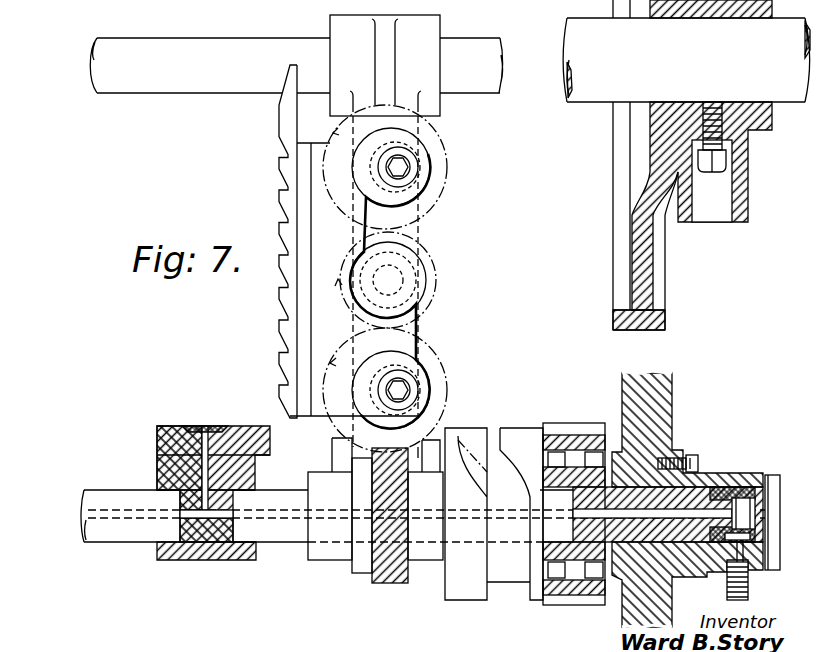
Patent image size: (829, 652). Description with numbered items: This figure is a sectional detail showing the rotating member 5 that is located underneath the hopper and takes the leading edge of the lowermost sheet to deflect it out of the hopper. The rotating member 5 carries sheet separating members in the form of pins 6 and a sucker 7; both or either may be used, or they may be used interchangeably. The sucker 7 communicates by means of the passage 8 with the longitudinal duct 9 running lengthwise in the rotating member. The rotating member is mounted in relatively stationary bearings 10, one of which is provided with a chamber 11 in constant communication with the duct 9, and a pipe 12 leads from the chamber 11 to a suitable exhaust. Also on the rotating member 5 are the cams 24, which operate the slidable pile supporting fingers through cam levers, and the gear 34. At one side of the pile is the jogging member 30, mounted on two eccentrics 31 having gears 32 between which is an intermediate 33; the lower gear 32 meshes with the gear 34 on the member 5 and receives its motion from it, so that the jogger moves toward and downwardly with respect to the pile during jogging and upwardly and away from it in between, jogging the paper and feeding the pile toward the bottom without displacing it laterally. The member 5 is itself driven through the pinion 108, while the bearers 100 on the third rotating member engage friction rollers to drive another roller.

The rotating member 5 is at (289, 545).
The pins 6 is at (178, 425).
The sucker 7 is at (215, 428).
The passage 8 is at (205, 478).
The longitudinal duct 9 is at (218, 520).
The bearings 10 is at (682, 455).
The chamber 11 is at (739, 505).
The pipe 12 is at (752, 586).
The cam 24 is at (470, 602).
The jogging member 30 is at (282, 328).
The eccentrics 31 is at (418, 383).
The gears 32 is at (447, 393).
The intermediate 33 is at (432, 270).
The gear 34 is at (396, 585).
The bearers 100 is at (666, 292).
The pinion 108 is at (568, 424).